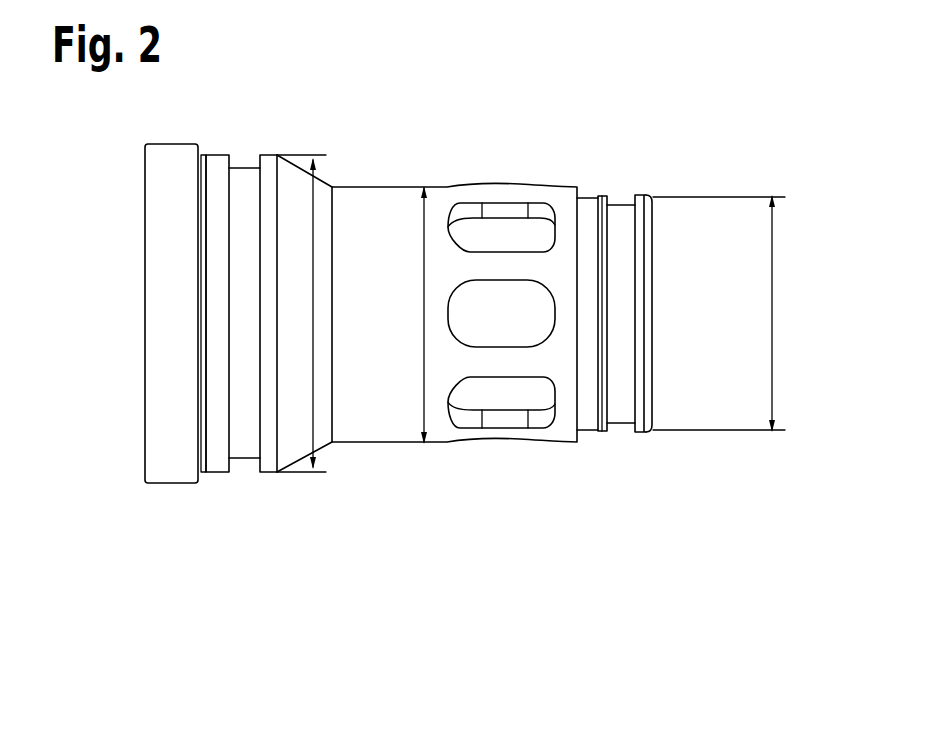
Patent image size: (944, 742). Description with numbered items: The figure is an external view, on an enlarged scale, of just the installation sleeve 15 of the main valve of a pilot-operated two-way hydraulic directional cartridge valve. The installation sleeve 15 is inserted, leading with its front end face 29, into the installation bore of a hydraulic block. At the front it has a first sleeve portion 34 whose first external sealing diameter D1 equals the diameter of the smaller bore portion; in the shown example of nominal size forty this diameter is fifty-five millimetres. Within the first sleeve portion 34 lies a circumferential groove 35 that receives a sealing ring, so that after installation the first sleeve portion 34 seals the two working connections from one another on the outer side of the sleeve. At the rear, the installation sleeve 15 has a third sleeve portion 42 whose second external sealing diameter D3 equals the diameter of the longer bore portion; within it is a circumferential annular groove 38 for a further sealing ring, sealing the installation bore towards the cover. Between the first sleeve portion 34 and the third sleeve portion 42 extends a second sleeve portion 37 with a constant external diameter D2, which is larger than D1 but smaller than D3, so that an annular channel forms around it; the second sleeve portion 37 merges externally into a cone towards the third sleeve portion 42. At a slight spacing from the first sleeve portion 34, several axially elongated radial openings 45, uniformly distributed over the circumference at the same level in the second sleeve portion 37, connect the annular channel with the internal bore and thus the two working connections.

The installation sleeve 15 is at (547, 460).
The front end face 29 is at (652, 273).
The first sleeve portion 34 is at (642, 420).
The circumferential groove 35 is at (620, 407).
The second sleeve portion 37 is at (378, 418).
The circumferential annular groove 38 is at (243, 460).
The third sleeve portion 42 is at (218, 458).
The radial openings 45 is at (512, 228).
The first sealing diameter D1 is at (772, 313).
The external diameter of second sleeve portion D2 is at (421, 269).
The second sealing diameter D3 is at (313, 235).